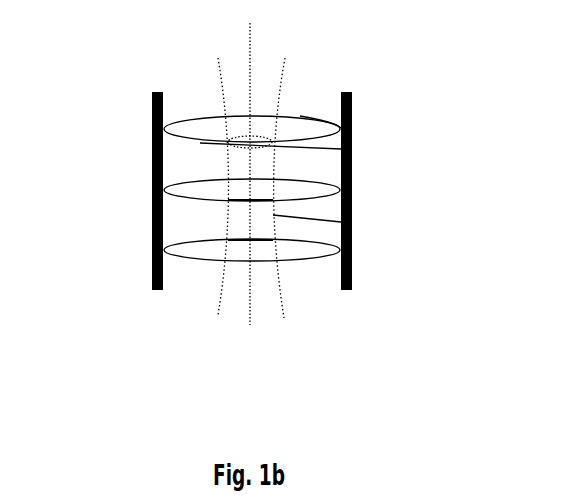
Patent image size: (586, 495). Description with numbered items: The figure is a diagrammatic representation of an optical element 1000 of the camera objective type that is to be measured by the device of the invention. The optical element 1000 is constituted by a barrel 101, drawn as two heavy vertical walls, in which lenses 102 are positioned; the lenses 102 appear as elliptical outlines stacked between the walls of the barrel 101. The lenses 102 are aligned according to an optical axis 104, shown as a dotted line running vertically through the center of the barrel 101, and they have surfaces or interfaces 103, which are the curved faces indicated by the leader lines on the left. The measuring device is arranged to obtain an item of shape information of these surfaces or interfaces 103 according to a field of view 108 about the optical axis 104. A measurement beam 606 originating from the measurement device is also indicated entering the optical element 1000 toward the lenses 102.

The optical element 1000 is at (156, 56).
The barrel 101 is at (345, 90).
The lenses 102 is at (352, 130).
The surfaces or interfaces 103 is at (200, 115).
The optical axis 104 is at (250, 325).
The field of view 108 is at (352, 157).
The measurement beam 606 is at (352, 230).